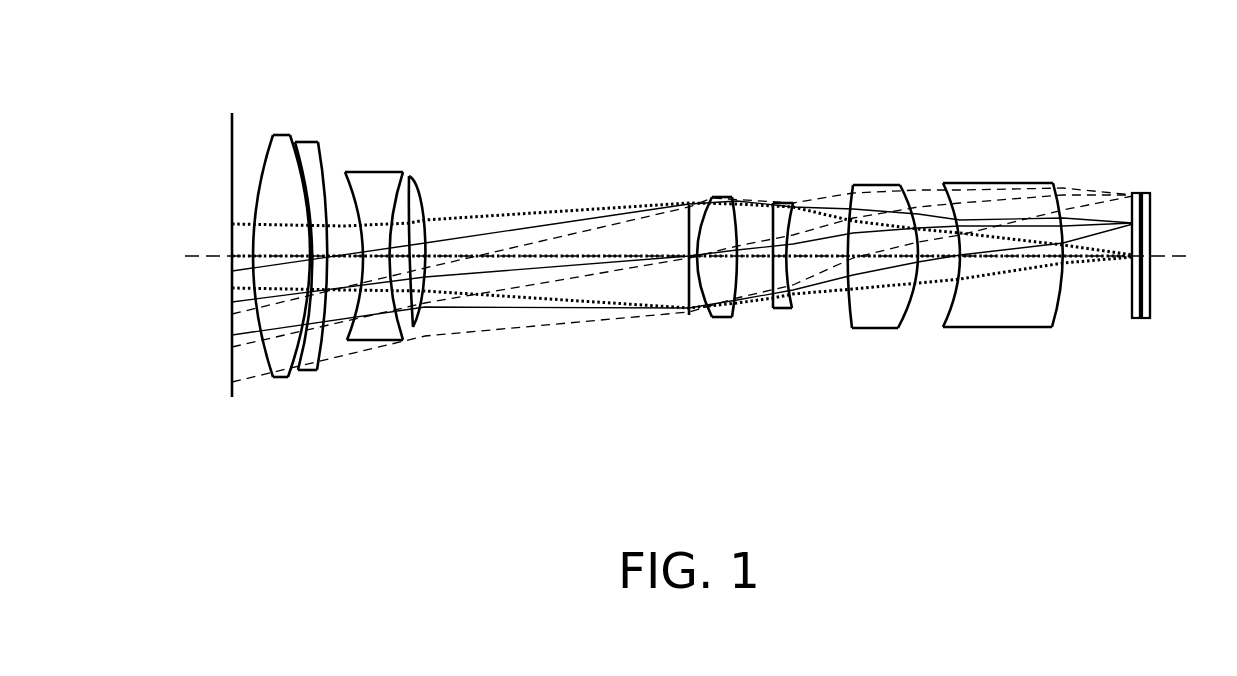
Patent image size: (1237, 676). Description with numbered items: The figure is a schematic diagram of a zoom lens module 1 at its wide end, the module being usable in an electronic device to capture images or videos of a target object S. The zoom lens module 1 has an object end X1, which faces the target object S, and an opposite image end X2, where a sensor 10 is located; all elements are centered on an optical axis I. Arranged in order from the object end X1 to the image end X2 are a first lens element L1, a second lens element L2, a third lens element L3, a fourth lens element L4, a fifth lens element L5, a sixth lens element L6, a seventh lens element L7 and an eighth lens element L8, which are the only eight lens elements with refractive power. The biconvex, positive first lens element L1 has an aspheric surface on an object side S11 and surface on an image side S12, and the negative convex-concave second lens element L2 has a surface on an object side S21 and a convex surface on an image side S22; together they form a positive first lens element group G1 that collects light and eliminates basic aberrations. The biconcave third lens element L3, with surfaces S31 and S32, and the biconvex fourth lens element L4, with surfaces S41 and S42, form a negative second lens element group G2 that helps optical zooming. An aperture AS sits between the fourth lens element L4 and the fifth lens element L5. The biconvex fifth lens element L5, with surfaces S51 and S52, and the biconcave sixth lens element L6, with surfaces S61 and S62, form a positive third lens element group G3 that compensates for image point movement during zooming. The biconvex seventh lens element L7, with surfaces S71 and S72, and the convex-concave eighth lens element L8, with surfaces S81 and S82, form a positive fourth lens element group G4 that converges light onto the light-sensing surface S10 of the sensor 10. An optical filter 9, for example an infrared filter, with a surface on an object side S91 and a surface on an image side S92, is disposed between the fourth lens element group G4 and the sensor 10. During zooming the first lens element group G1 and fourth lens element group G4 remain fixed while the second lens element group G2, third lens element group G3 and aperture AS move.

The zoom lens module 1 is at (1236, 461).
The object end X1 is at (222, 118).
The image end X2 is at (1155, 172).
The target object S is at (232, 172).
The optical axis I is at (679, 256).
The first lens element group G1 is at (333, 70).
The second lens element group G2 is at (440, 109).
The third lens element group G3 is at (783, 137).
The fourth lens element group G4 is at (985, 113).
The first lens element L1 is at (281, 142).
The second lens element L2 is at (310, 150).
The third lens element L3 is at (380, 180).
The fourth lens element L4 is at (420, 195).
The fifth lens element L5 is at (722, 205).
The sixth lens element L6 is at (783, 210).
The seventh lens element L7 is at (876, 192).
The eighth lens element L8 is at (972, 190).
The aperture AS is at (689, 215).
The surface on object side of first lens element S11 is at (265, 353).
The surface on image side of first lens element S12 is at (296, 338).
The surface on object side of second lens element S21 is at (304, 355).
The surface on image side of second lens element S22 is at (324, 346).
The surface on object side of third lens element S31 is at (357, 333).
The surface on image side of third lens element S32 is at (393, 331).
The surface on object side of fourth lens element S41 is at (415, 323).
The surface on image side of fourth lens element S42 is at (426, 306).
The surface on object side of fifth lens element S51 is at (702, 299).
The surface on image side of fifth lens element S52 is at (733, 284).
The surface on object side of sixth lens element S61 is at (772, 301).
The surface on image side of sixth lens element S62 is at (793, 302).
The surface on object side of seventh lens element S71 is at (849, 314).
The surface on image side of seventh lens element S72 is at (904, 309).
The surface on object side of eighth lens element S81 is at (954, 301).
The surface on image side of eighth lens element S82 is at (1050, 303).
The optical filter 9 is at (1133, 212).
The surface on object side of optical filter S91 is at (1129, 310).
The surface on image side of optical filter S92 is at (1143, 321).
The sensor 10 is at (1150, 207).
The light-sensing surface S10 is at (1145, 279).